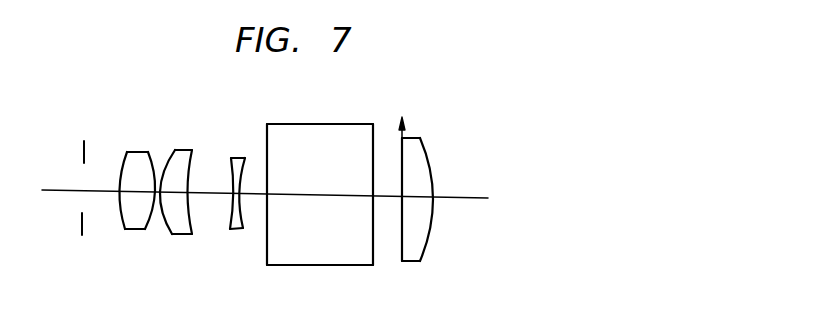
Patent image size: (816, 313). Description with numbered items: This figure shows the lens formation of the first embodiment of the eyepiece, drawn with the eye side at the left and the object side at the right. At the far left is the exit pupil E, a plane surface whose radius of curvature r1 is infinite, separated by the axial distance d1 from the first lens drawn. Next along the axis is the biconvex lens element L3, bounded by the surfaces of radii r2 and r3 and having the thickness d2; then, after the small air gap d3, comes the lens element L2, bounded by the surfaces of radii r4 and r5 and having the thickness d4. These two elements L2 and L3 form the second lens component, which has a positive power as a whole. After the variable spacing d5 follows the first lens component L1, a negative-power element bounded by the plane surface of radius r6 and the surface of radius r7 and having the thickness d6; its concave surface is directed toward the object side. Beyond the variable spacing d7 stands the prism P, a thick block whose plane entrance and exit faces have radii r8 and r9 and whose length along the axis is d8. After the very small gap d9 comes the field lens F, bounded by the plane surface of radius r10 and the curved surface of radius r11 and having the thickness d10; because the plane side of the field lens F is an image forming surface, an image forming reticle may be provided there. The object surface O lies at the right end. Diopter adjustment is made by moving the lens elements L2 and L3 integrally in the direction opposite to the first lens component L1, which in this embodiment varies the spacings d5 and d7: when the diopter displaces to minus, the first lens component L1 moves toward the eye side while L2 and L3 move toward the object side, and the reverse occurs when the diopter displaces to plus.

The exit pupil E is at (70, 186).
The first lens component L1 is at (233, 185).
The lens element L2 is at (184, 183).
The lens element L3 is at (131, 183).
The prism P is at (315, 192).
The object surface O is at (400, 138).
The field lens F is at (426, 203).
The radius of curvature r1 is at (81, 236).
The radius of curvature r2 is at (123, 227).
The radius of curvature r3 is at (153, 230).
The radius of curvature r4 is at (170, 234).
The radius of curvature r5 is at (196, 235).
The radius of curvature r6 is at (231, 230).
The radius of curvature r7 is at (244, 229).
The radius of curvature r8 is at (267, 256).
The radius of curvature r9 is at (373, 257).
The radius of curvature r10 is at (400, 256).
The radius of curvature r11 is at (422, 256).
The thickness d1 is at (101, 190).
The thickness d2 is at (136, 190).
The thickness d3 is at (155, 190).
The thickness d4 is at (177, 190).
The thickness d5 is at (205, 193).
The thickness d6 is at (231, 191).
The thickness d7 is at (253, 193).
The thickness d8 is at (308, 196).
The thickness d9 is at (382, 195).
The thickness d10 is at (420, 197).